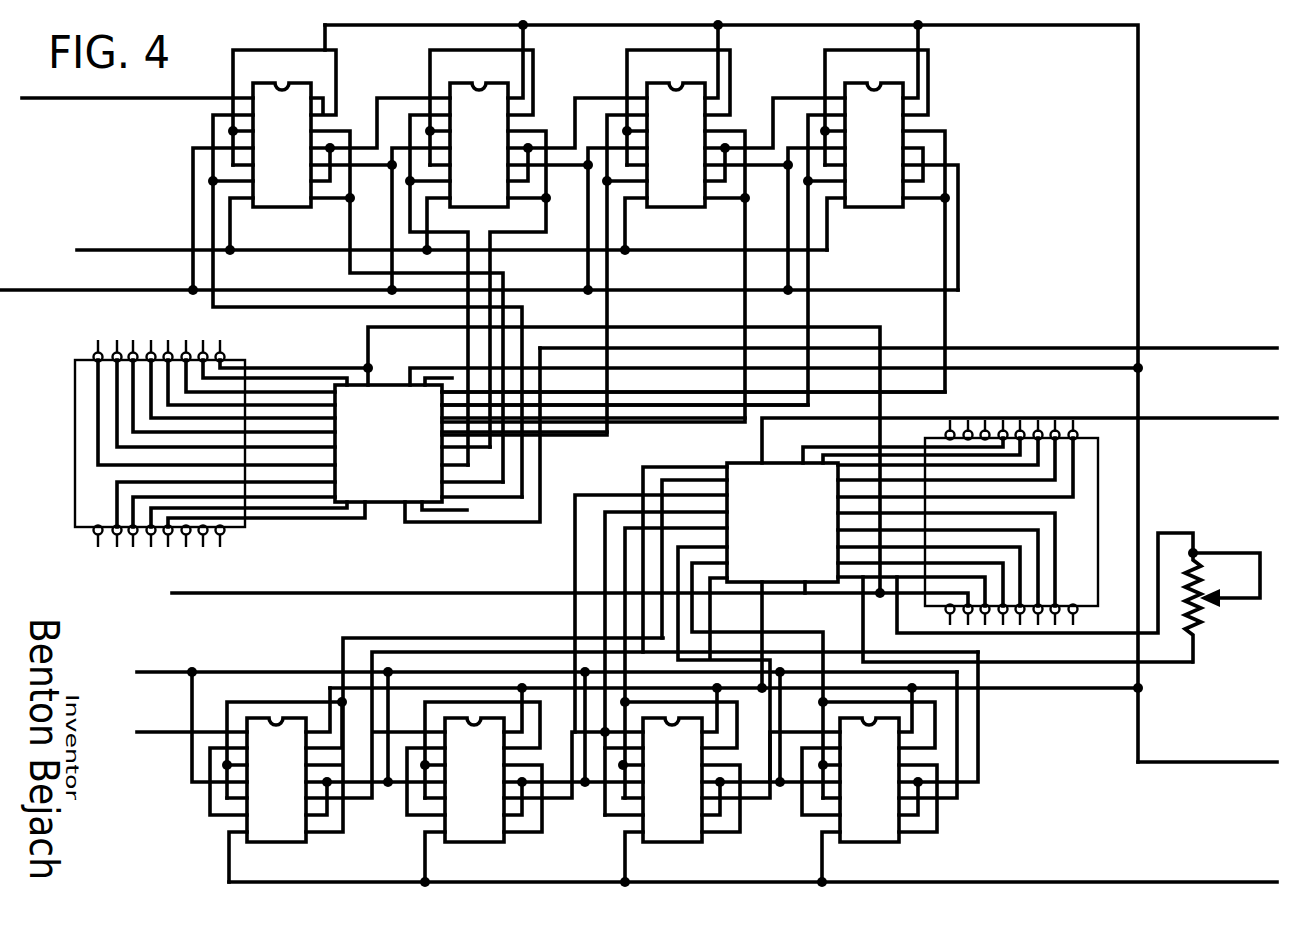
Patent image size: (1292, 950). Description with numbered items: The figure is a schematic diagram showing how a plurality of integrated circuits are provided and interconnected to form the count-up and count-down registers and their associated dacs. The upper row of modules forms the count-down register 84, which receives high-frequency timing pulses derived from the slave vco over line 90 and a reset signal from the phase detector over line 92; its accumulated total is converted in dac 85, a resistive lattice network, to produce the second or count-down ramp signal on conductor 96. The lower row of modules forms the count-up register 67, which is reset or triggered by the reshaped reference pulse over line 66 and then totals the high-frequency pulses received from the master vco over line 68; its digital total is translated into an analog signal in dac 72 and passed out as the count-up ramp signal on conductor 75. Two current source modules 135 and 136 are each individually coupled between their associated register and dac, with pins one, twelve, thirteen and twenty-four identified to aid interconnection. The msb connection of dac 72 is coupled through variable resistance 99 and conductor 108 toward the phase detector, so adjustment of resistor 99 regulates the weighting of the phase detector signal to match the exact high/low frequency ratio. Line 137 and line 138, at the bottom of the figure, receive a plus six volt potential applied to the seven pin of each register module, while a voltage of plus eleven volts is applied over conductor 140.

The count-down register 84 is at (600, 63).
The dac 85 is at (60, 437).
The line 90 is at (96, 100).
The line 92 is at (42, 290).
The line 137 is at (118, 250).
The current source 135 is at (388, 443).
The current source 136 is at (782, 522).
The conductor 96 is at (1218, 347).
The conductor 75 is at (1228, 418).
The dac 72 is at (1135, 531).
The variable resistance 99 is at (1222, 605).
The conductor 108 is at (188, 593).
The line 66 is at (168, 672).
The line 68 is at (158, 728).
The count-up register 67 is at (562, 871).
The conductor 140 is at (1200, 762).
The line 138 is at (1180, 882).